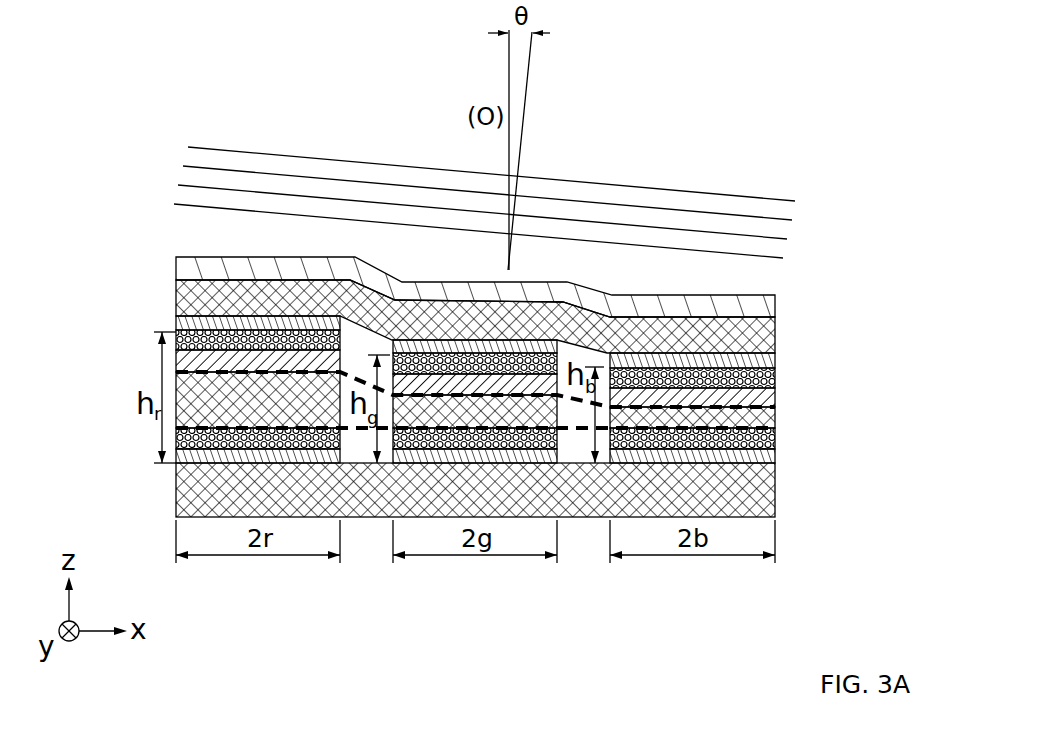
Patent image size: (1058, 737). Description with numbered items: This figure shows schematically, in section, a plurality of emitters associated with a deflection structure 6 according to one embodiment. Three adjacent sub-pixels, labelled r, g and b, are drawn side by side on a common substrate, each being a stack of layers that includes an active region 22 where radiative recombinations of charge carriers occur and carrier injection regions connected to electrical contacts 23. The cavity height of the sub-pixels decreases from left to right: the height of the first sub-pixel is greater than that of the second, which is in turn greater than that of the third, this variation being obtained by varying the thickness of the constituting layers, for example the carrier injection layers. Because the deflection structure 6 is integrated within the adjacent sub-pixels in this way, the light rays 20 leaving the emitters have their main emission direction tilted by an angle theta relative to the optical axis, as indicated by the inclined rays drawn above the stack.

The light rays 20 is at (745, 238).
The electrical contacts 23 is at (757, 359).
The active region 22 is at (753, 398).
The deflection structure 6 is at (775, 407).